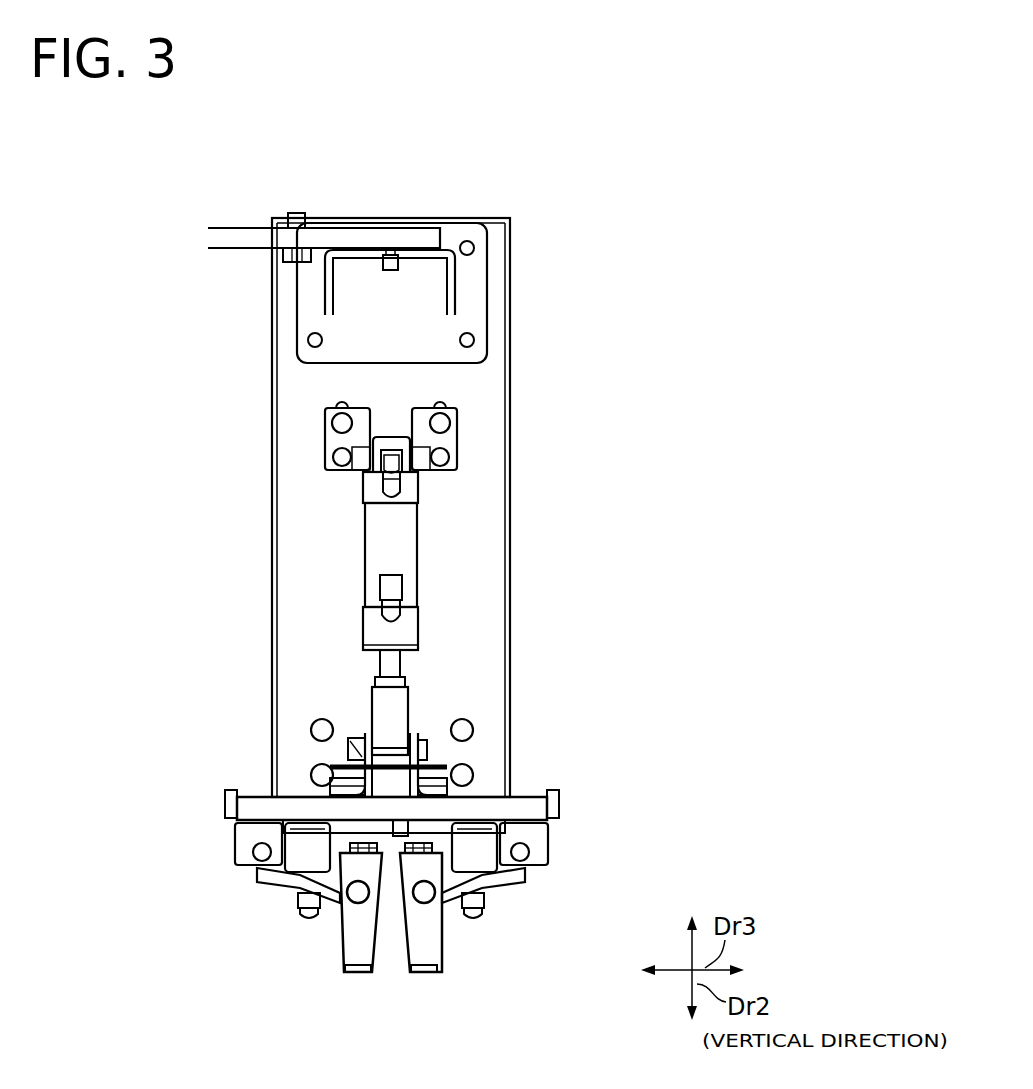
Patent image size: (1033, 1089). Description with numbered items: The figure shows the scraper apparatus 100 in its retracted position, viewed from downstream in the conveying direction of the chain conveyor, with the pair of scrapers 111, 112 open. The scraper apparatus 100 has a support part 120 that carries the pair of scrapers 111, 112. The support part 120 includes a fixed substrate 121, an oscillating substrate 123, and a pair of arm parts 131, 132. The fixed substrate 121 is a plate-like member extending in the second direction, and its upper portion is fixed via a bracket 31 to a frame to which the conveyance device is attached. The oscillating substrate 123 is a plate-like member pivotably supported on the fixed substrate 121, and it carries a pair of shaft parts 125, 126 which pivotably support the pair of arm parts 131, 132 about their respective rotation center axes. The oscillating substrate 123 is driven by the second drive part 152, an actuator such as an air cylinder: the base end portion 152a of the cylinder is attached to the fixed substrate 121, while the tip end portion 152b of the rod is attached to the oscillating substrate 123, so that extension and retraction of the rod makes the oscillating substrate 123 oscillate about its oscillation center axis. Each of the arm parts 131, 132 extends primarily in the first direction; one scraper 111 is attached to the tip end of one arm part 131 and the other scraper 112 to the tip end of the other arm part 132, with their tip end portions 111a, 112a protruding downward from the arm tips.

The bracket 31 is at (230, 212).
The scraper apparatus 100 is at (556, 176).
The support part 120 is at (548, 443).
The fixed substrate 121 is at (490, 385).
The oscillating substrate 123 is at (385, 790).
The shaft part 125 is at (305, 855).
The shaft part 126 is at (483, 855).
The arm part 131 is at (330, 883).
The arm part 132 is at (455, 880).
The scraper 111 is at (363, 932).
The tip end portion 111a is at (353, 957).
The scraper 112 is at (440, 932).
The tip end portion 112a is at (430, 957).
The second drive part 152 is at (375, 535).
The base end portion 152a is at (392, 447).
The tip end portion 152b is at (390, 730).